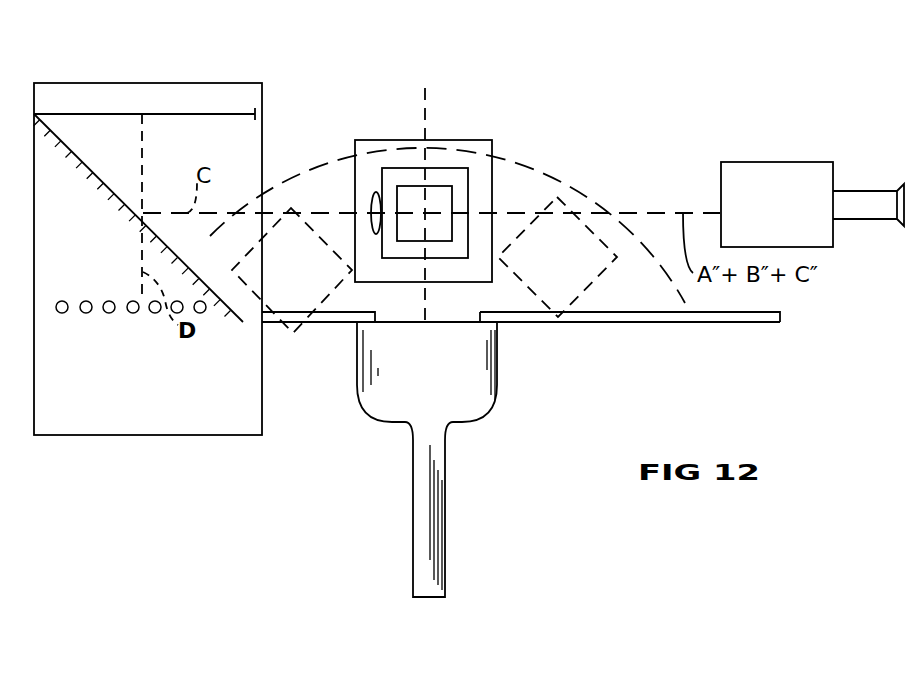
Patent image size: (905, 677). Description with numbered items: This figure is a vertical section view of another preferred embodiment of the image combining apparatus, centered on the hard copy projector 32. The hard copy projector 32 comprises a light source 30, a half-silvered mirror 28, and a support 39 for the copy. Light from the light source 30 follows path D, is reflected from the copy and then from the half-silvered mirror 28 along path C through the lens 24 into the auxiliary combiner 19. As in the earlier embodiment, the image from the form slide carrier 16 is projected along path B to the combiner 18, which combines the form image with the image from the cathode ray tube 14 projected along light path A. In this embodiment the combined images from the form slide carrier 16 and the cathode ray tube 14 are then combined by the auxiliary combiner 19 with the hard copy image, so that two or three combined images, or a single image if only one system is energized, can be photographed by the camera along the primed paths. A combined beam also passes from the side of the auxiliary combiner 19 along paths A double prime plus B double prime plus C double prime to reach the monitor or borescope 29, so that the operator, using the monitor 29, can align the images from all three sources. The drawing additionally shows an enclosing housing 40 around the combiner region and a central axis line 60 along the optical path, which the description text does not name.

The cathode ray tube 14 is at (497, 393).
The form slide carrier 16 is at (627, 214).
The combiner 18 is at (467, 183).
The auxiliary combiner 19 is at (452, 208).
The lens 24 is at (370, 208).
The half-silvered mirror 28 is at (163, 246).
The monitor or borescope 29 is at (766, 162).
The light source 30 is at (64, 313).
The hard copy projector 32 is at (160, 435).
The support 39 is at (100, 113).
The detector assembly housing 40 is at (470, 140).
The optical axis 60 is at (428, 308).